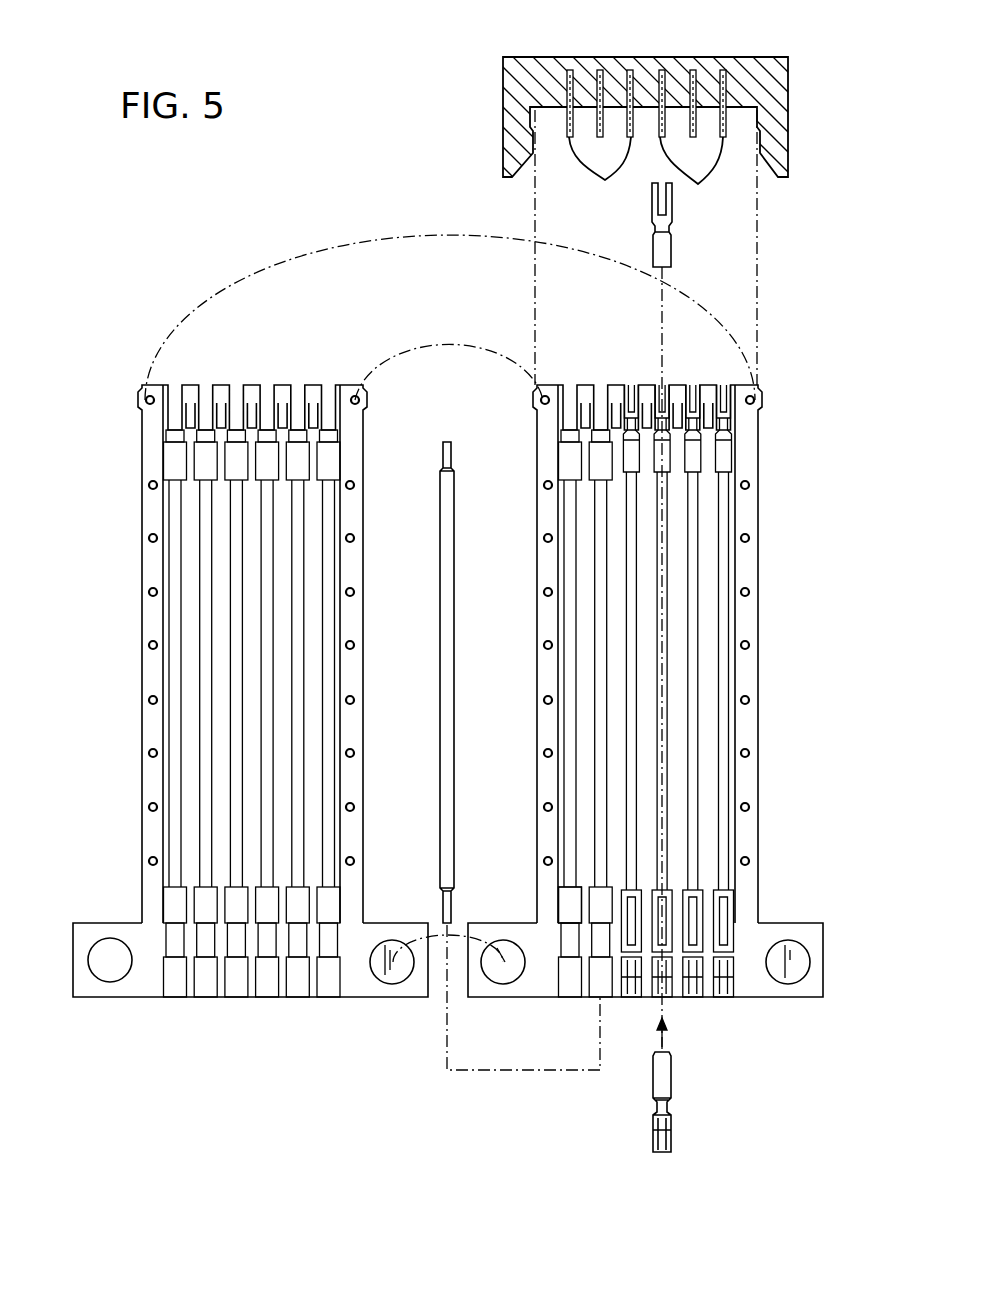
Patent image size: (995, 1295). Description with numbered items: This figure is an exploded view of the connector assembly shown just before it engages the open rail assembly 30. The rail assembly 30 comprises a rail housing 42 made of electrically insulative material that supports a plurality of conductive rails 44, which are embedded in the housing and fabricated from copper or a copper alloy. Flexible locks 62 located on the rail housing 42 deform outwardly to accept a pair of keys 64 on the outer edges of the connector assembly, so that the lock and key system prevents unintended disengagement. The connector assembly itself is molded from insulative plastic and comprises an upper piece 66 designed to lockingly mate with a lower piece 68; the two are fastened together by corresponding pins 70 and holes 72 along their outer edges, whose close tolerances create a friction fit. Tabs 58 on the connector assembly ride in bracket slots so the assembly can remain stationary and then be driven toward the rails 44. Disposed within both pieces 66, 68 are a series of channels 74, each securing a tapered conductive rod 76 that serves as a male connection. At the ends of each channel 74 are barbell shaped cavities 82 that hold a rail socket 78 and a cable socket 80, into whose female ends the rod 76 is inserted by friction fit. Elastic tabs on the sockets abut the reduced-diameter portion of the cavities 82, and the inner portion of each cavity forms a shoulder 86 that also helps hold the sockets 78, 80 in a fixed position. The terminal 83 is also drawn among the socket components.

The rail assembly 30 is at (502, 63).
The rail housing 42 is at (683, 57).
The conductive rails 44 is at (646, 141).
The tabs 58 is at (815, 957).
The flexible locks 62 is at (788, 152).
The keys 64 is at (141, 390).
The upper piece 66 is at (296, 1000).
The lower piece 68 is at (760, 1000).
The pins 70 is at (149, 806).
The holes 72 is at (149, 861).
The channels 74 is at (170, 557).
The conductive rod 76 is at (456, 690).
The rail socket 78 is at (676, 236).
The cable socket 80 is at (675, 1092).
The barbell shaped cavities 82 is at (560, 462).
The forked terminal 83 is at (738, 470).
The shoulder 86 is at (560, 900).